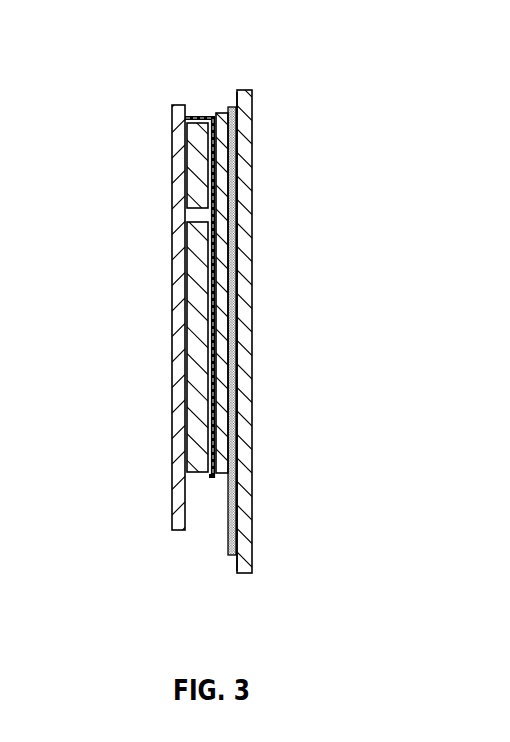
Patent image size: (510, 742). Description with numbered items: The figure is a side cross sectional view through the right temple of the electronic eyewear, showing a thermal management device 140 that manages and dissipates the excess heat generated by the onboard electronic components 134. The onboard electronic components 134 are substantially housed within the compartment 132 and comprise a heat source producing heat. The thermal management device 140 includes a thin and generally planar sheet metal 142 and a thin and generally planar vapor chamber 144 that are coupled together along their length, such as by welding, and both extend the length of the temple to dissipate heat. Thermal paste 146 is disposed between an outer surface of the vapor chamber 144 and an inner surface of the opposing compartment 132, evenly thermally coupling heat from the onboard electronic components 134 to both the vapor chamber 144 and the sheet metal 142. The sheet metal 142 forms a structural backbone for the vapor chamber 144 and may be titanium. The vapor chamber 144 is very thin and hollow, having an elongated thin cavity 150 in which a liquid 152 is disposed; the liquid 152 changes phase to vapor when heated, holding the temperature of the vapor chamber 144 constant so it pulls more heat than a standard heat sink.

The thermal management device 140 is at (275, 124).
The compartment 132 is at (189, 117).
The onboard electronic components 134 is at (195, 170).
The thermal paste 146 is at (218, 120).
The vapor chamber 144 is at (222, 113).
The liquid 152 is at (235, 300).
The sheet metal 142 is at (246, 91).
The cavity 150 is at (240, 190).